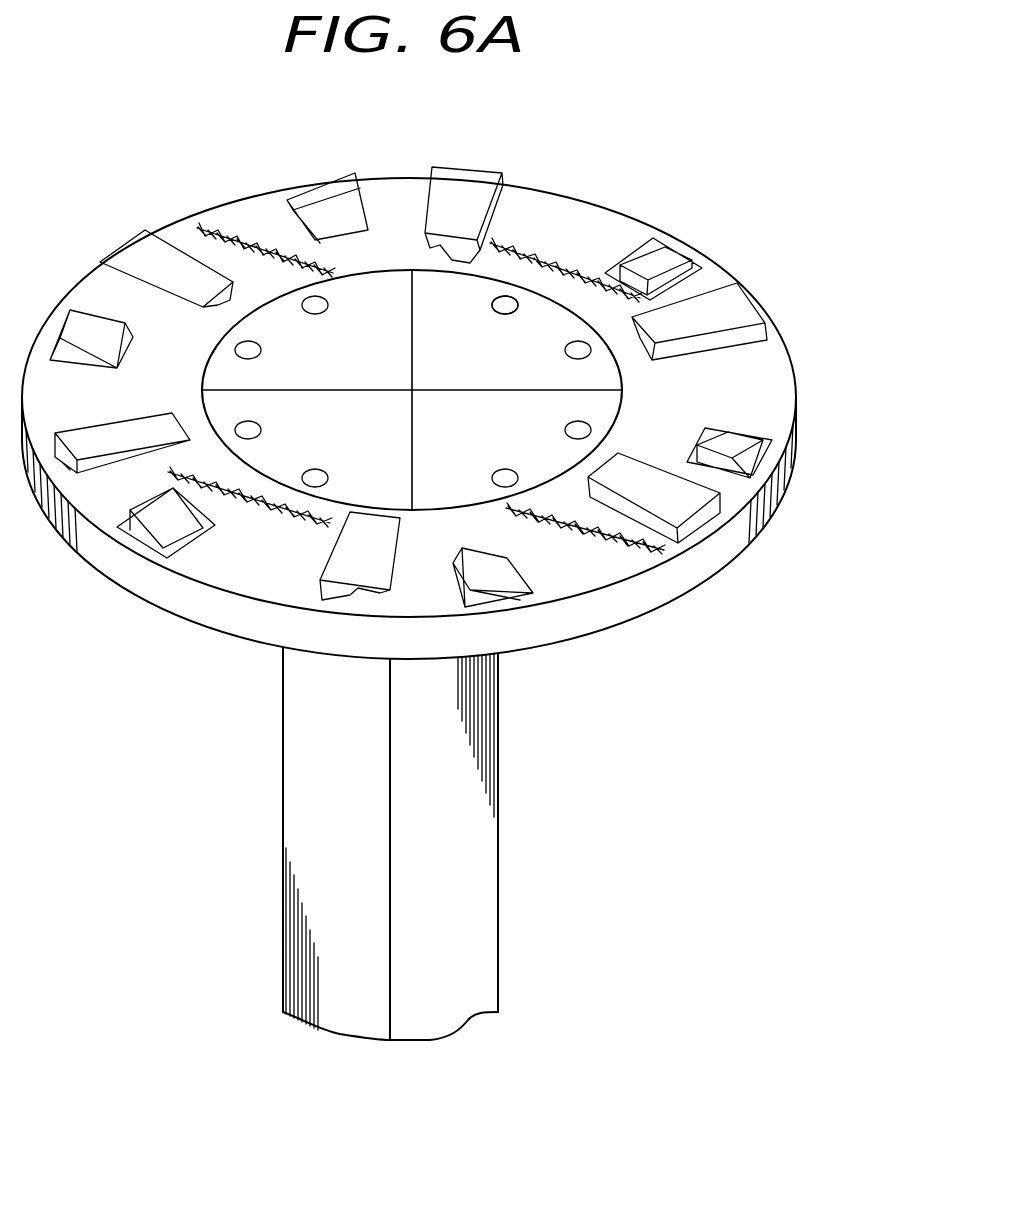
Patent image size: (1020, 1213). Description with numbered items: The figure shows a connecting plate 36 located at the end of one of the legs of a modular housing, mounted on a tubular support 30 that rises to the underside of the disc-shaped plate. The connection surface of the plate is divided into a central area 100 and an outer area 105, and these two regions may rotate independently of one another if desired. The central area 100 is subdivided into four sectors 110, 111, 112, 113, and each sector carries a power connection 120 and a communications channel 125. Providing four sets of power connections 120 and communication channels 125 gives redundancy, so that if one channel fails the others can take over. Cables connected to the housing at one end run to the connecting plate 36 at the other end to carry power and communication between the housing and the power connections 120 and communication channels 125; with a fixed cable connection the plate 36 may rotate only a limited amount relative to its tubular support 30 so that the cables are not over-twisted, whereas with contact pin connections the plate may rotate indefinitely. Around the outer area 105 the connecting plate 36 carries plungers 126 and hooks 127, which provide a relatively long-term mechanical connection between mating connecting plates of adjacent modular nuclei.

The shaft 30 is at (500, 890).
The connecting plate 36 is at (790, 345).
The central area 100 is at (395, 268).
The outer area 105 is at (205, 196).
The sector 110 is at (360, 366).
The sector 111 is at (367, 436).
The sector 112 is at (495, 436).
The sector 113 is at (502, 366).
The power connection 120 is at (506, 296).
The communications channel 125 is at (588, 356).
The plunger 126 is at (757, 462).
The hook 127 is at (690, 525).